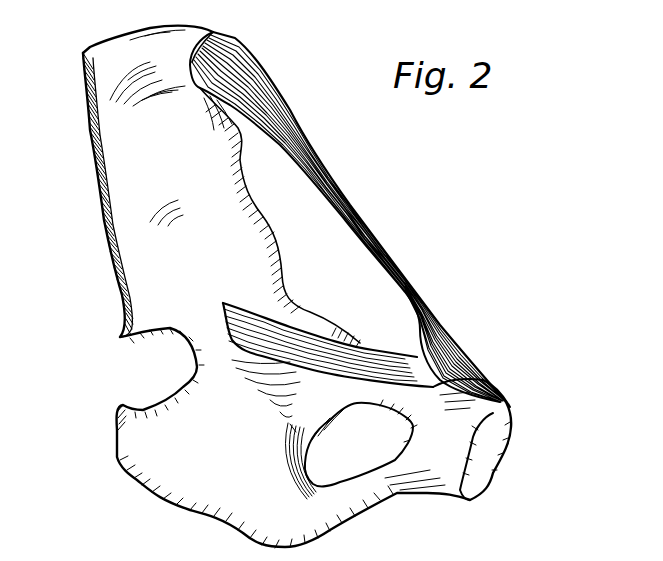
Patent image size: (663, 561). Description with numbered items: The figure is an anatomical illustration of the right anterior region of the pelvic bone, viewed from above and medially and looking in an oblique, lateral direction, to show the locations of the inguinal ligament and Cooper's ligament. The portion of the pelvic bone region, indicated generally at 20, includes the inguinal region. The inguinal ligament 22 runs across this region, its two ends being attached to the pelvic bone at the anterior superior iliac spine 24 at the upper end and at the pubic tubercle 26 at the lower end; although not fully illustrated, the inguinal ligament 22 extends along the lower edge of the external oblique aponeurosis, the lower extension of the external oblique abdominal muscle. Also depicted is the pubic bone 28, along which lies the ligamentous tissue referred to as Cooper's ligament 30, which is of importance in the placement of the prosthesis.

The pelvic bone region 20 is at (212, 246).
The inguinal ligament 22 is at (326, 174).
The anterior superior iliac spine 24 is at (213, 30).
The pubic tubercle 26 is at (513, 403).
The pubic bone 28 is at (497, 431).
The Cooper's ligament 30 is at (320, 340).